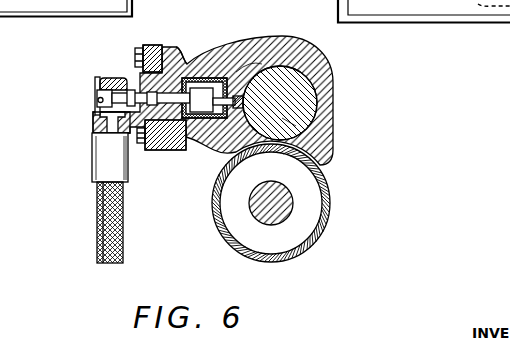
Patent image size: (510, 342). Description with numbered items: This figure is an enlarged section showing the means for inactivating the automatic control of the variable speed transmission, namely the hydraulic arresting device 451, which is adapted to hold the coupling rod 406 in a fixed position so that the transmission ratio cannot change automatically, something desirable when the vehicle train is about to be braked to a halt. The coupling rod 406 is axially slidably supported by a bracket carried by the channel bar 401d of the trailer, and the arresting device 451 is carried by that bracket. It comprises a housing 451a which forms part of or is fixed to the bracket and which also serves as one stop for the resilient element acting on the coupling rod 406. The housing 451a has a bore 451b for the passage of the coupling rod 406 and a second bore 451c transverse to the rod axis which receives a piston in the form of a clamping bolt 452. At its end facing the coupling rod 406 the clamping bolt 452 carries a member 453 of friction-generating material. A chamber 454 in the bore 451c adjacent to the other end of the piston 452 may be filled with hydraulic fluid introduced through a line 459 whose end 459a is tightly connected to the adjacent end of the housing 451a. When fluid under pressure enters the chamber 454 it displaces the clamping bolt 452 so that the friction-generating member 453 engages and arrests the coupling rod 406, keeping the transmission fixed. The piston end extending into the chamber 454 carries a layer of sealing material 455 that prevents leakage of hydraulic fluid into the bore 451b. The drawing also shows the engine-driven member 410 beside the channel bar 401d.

The hydraulic arresting device 451 is at (84, 137).
The housing 451a is at (316, 90).
The bore 451b is at (310, 80).
The second bore 451c is at (247, 66).
The clamping bolt 452 is at (201, 128).
The friction-generating member 453 is at (218, 137).
The chamber 454 is at (180, 65).
The layer of sealing material 455 is at (183, 133).
The line 459 is at (102, 224).
The end of line 459a is at (153, 48).
The coupling rod 406 is at (292, 122).
The member 410 is at (288, 210).
The channel bar 401d is at (228, 233).